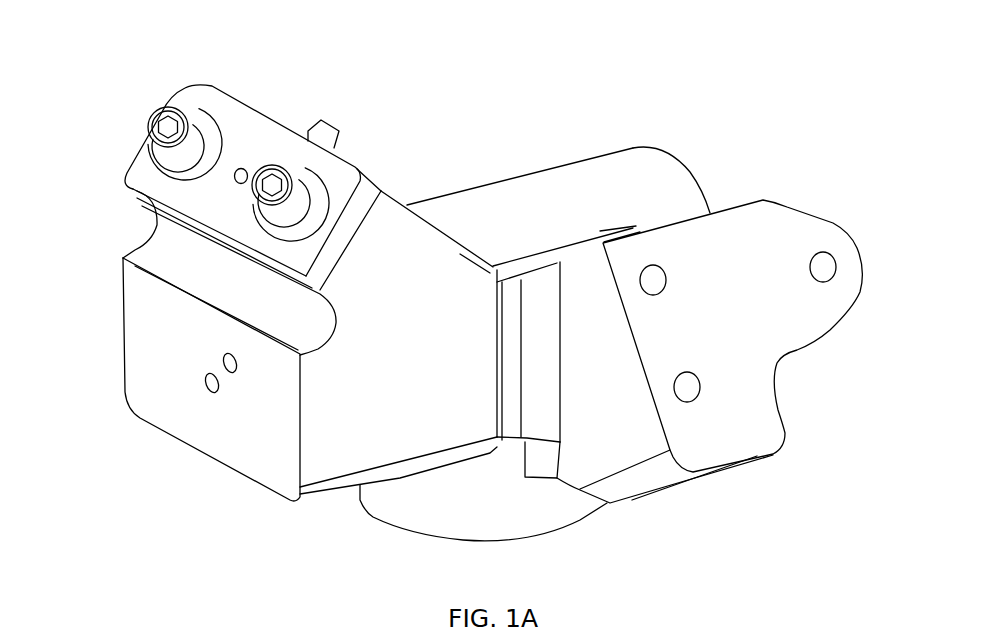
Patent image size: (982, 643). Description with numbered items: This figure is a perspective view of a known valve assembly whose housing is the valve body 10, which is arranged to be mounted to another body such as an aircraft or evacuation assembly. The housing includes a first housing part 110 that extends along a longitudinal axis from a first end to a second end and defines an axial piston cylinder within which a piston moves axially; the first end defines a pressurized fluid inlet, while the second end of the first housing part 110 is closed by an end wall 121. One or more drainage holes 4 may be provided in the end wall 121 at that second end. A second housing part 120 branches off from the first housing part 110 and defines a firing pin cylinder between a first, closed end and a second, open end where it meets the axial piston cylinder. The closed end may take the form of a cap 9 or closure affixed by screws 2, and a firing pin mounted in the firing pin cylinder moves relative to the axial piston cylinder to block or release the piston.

The screws 2 is at (155, 128).
The cap 9 is at (250, 137).
The second housing part 120 is at (360, 162).
The end wall 121 is at (147, 393).
The drainage holes 4 is at (227, 374).
The first housing part 110 is at (527, 170).
The valve body 10 is at (608, 222).